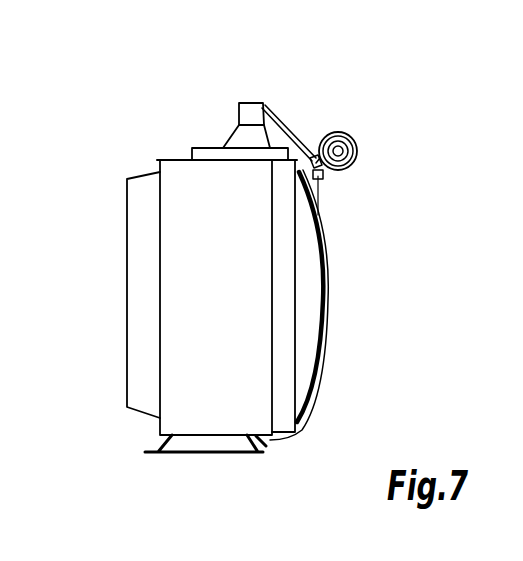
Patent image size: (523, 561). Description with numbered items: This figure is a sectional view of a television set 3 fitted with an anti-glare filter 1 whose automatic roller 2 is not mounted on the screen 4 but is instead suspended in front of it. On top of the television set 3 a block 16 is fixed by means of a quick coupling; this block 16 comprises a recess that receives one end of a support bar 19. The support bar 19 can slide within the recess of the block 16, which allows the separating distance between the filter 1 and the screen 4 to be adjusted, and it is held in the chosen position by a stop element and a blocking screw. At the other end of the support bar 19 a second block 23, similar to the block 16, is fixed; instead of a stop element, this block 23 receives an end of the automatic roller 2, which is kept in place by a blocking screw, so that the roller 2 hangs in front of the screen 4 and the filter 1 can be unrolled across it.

The filter 1 is at (323, 202).
The automatic roller 2 is at (365, 143).
The television set 3 is at (147, 313).
The screen 4 is at (300, 313).
The block 16 is at (243, 110).
The support bar 19 is at (287, 128).
The block 23 is at (330, 178).